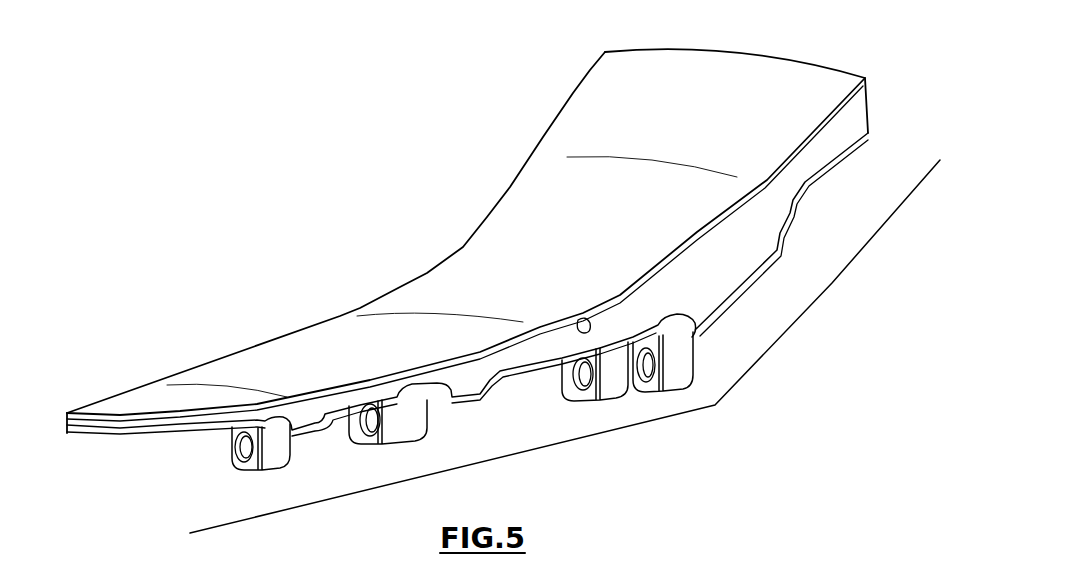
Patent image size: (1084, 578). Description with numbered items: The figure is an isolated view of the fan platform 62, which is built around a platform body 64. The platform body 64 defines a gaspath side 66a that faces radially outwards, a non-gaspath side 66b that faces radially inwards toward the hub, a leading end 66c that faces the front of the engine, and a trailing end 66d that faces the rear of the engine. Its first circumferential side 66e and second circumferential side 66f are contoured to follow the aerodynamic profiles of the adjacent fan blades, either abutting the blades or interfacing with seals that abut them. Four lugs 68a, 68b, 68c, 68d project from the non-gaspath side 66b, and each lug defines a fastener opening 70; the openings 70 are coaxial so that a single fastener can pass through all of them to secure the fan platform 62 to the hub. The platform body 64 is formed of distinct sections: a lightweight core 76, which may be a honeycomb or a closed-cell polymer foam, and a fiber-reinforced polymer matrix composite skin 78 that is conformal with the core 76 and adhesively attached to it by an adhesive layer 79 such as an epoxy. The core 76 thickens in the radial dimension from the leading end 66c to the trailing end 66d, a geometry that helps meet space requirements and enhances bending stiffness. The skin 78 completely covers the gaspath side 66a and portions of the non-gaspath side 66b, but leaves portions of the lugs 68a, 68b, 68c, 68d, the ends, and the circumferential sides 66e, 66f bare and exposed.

The fan platform 62 is at (496, 263).
The platform body 64 is at (833, 285).
The gaspath side 66a is at (347, 337).
The non-gaspath side 66b is at (528, 367).
The leading end 66c is at (73, 447).
The trailing end 66d is at (858, 60).
The first circumferential side 66e is at (787, 190).
The second circumferential side 66f is at (465, 245).
The lug 68a is at (236, 480).
The lug 68b is at (371, 458).
The lug 68c is at (591, 417).
The lug 68d is at (690, 395).
The fastener opening 70 is at (227, 450).
The core 76 is at (472, 285).
The fiber-reinforced polymer matrix composite skin 78 is at (690, 100).
The adhesive layer 79 is at (581, 320).